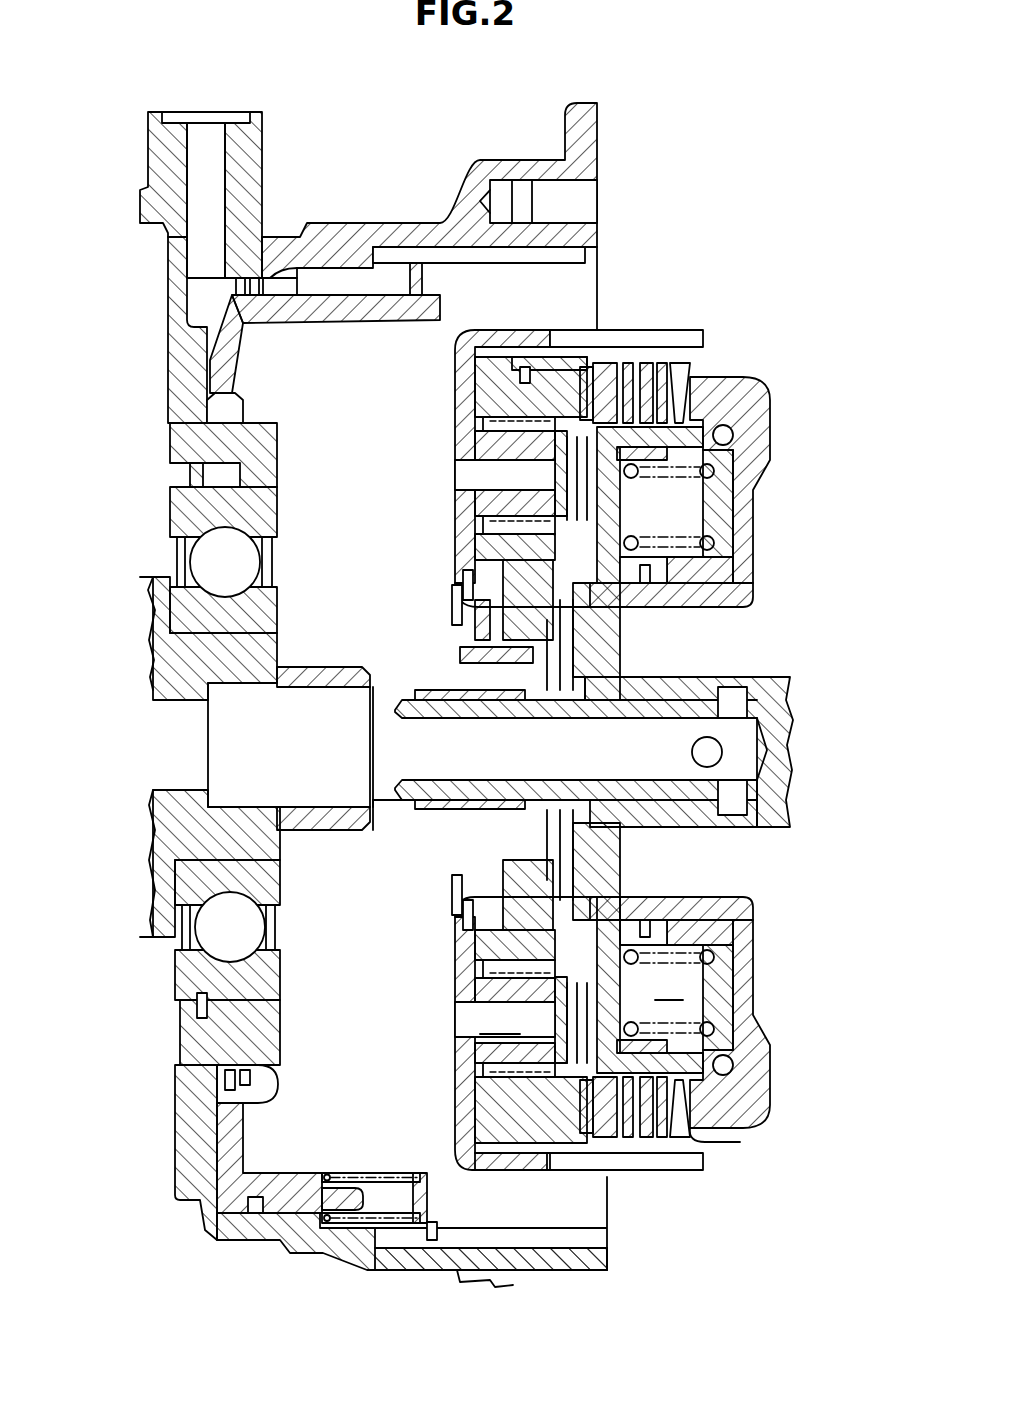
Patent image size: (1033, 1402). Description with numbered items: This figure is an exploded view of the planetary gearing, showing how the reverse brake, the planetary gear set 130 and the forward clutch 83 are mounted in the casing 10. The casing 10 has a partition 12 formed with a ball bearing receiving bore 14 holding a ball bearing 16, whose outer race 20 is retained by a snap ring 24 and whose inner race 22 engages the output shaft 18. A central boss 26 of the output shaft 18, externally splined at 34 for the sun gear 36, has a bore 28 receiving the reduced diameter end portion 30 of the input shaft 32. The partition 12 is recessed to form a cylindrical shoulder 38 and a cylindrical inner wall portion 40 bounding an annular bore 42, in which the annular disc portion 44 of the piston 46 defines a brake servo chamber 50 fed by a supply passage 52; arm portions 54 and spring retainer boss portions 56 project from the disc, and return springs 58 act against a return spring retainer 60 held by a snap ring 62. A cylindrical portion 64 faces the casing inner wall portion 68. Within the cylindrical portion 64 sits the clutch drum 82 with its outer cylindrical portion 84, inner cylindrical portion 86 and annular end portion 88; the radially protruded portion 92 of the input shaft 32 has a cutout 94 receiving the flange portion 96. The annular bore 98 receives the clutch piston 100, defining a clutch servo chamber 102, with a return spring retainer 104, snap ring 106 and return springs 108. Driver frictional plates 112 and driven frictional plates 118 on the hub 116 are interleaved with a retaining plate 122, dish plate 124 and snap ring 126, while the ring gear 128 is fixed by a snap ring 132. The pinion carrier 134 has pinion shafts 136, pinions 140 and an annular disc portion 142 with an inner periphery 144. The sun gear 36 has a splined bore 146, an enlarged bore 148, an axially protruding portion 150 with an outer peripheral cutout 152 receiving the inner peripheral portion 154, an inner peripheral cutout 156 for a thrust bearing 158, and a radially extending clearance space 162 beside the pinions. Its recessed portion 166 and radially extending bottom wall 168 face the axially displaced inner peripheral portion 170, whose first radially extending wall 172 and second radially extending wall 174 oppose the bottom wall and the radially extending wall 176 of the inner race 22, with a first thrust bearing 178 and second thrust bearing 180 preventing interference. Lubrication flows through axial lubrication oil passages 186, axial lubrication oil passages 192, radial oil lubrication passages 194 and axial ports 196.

The casing 10 is at (431, 222).
The partition 12 is at (277, 456).
The ball bearing receiving bore 14 is at (243, 500).
The ball bearing 16 is at (188, 565).
The output shaft 18 is at (163, 680).
The outer race 20 is at (185, 975).
The inner race 22 is at (183, 893).
The snap ring 24 is at (205, 1010).
The central boss 26 is at (310, 665).
The bore 28 is at (280, 692).
The reduced diameter end portion 30 is at (400, 812).
The input shaft 32 is at (778, 712).
The external spline 34 is at (325, 818).
The sun gear 36 is at (475, 945).
The cylindrical shoulder 38 is at (235, 1090).
The cylindrical inner wall portion 40 is at (265, 1220).
The annular bore 42 is at (247, 350).
The annular disc portion 44 is at (222, 1177).
The piston 46 is at (203, 1210).
The brake servo chamber 50 is at (205, 298).
The supply passage 52 is at (205, 168).
The arm portion 54 is at (342, 302).
The spring retainer boss portion 56 is at (348, 1178).
The return spring 58 is at (353, 1250).
The return spring retainer 60 is at (420, 1233).
The snap ring 62 is at (440, 1262).
The cylindrical portion 64 is at (583, 330).
The cylindrical inner wall portion 68 is at (585, 268).
The clutch drum 82 is at (760, 975).
The forward clutch 83 is at (780, 387).
The outer cylindrical portion 84 is at (705, 1140).
The inner cylindrical portion 86 is at (720, 903).
The annular end portion 88 is at (750, 1013).
The radially protruded portion 92 is at (645, 883).
The cutout 94 is at (614, 628).
The flange portion 96 is at (670, 897).
The annular bore 98 is at (670, 993).
The clutch piston 100 is at (745, 996).
The clutch servo chamber 102 is at (735, 925).
The return spring retainer 104 is at (568, 1140).
The snap ring 106 is at (537, 1140).
The return springs 108 is at (740, 1035).
The driver frictional plates 112 is at (662, 365).
The hub 116 is at (735, 510).
The driven frictional plates 118 is at (662, 1140).
The retaining plate 122 is at (628, 365).
The dish plate 124 is at (738, 392).
The snap ring 126 is at (577, 368).
The ring gear 128 is at (480, 1163).
The planetary gear set 130 is at (496, 391).
The snap ring 132 is at (508, 365).
The pinion carrier 134 is at (455, 470).
The pinion shafts 136 is at (505, 1019).
The pinions 140 is at (560, 960).
The annular disc portion 142 is at (470, 1067).
The inner periphery 144 is at (480, 657).
The splined bore 146 is at (440, 810).
The enlarged bore 148 is at (557, 900).
The axially protruding portion 150 is at (645, 590).
The outer peripheral cutout 152 is at (705, 540).
The inner peripheral portion 154 is at (735, 577).
The inner peripheral cutout 156 is at (613, 690).
The thrust bearing 158 is at (598, 880).
The radially extending clearance space 162 is at (700, 480).
The recessed portion 166 is at (455, 907).
The radially extending bottom wall 168 is at (492, 665).
The axially displaced inner peripheral portion 170 is at (456, 890).
The first radially extending wall 172 is at (470, 558).
The second radially extending wall 174 is at (470, 612).
The radially extending wall 176 is at (270, 600).
The first thrust bearing 178 is at (460, 578).
The second thrust bearing 180 is at (453, 600).
The axial lubrication oil passages 186 is at (618, 843).
The axial lubrication oil passages 192 is at (558, 665).
The radial oil lubrication passages 194 is at (457, 525).
The axial ports 196 is at (690, 603).